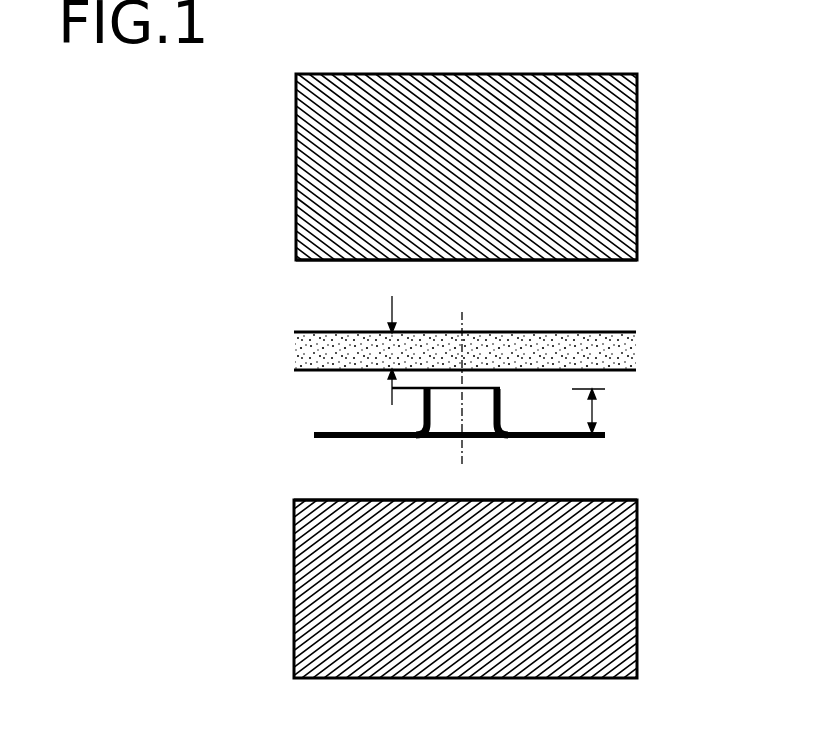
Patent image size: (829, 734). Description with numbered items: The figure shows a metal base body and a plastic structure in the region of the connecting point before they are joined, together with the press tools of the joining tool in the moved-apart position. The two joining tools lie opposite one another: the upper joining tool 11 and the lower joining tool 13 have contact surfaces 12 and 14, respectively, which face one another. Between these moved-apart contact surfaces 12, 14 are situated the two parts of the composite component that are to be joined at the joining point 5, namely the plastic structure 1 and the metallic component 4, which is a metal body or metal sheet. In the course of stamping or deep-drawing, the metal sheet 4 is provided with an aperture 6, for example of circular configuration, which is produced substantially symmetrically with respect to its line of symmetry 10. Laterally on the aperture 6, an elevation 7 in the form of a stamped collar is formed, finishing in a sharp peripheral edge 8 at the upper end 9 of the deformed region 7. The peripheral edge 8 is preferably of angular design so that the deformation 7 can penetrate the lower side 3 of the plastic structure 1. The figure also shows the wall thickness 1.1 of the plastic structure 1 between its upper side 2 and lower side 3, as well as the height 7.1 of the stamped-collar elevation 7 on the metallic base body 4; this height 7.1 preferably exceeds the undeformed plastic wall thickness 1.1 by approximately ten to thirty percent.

The plastic structure 1 is at (623, 353).
The wall thickness 1.1 is at (387, 355).
The upper side 2 is at (613, 333).
The lower side 3 is at (613, 372).
The metallic component 4 is at (313, 436).
The joining point 5 is at (478, 378).
The aperture 6 is at (450, 412).
The stamp-collar-like elevation 7 is at (421, 404).
The height of the elevation 7.1 is at (596, 412).
The peripheral edge 8 is at (392, 388).
The collar end 9 is at (487, 385).
The line of symmetry 10 is at (463, 456).
The upper joining tool 11 is at (613, 200).
The contact surface 12 is at (612, 262).
The lower joining tool 13 is at (605, 570).
The contact surface 14 is at (334, 500).